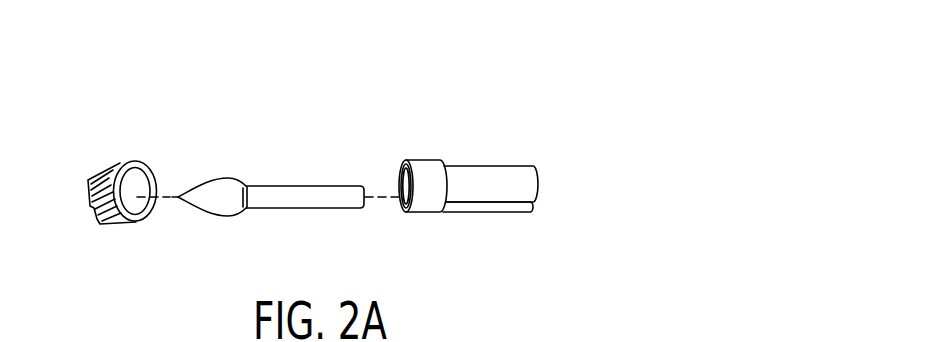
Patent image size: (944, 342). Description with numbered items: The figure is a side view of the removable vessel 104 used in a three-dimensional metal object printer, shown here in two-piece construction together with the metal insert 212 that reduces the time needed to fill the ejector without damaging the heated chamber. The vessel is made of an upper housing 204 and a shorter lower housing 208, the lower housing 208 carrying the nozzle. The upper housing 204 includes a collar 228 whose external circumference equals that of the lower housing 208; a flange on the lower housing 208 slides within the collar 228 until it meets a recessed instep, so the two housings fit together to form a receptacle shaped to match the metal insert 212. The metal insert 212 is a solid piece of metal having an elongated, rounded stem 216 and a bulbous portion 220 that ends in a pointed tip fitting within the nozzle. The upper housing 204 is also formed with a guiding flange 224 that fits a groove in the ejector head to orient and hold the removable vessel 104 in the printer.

The removable vessel 104 is at (486, 143).
The upper housing 204 is at (495, 180).
The lower housing 208 is at (112, 178).
The metal insert 212 is at (268, 132).
The stem 216 is at (320, 193).
The bulbous portion 220 is at (207, 193).
The guiding flange 224 is at (470, 207).
The collar 228 is at (422, 172).